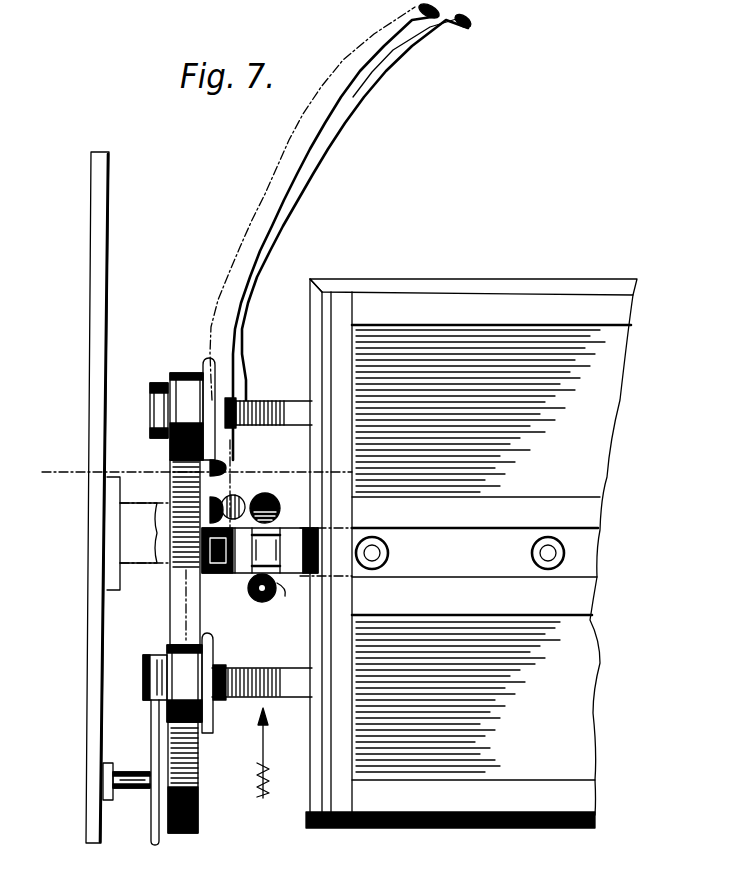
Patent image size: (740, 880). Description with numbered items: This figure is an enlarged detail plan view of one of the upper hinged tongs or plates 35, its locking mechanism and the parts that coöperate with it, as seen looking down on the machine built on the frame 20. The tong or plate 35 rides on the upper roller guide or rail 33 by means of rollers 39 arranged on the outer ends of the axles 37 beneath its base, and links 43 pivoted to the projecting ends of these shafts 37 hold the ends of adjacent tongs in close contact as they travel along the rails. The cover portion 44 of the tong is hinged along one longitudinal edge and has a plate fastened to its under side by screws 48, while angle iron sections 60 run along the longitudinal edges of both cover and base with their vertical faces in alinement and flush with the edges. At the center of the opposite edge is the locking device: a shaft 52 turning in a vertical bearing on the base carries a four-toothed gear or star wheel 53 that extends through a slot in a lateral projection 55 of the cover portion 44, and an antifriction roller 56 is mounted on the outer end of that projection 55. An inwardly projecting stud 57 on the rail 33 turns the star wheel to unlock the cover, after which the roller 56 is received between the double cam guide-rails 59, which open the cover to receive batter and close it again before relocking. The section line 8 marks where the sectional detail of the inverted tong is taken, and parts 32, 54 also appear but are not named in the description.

The frame 20 is at (112, 497).
The double cam guide-rails 59 is at (268, 180).
The section line 8 is at (197, 469).
The rollers 39 is at (187, 369).
The links 43 is at (150, 390).
The axles 37 is at (284, 400).
The upper roller guides or rails 33 is at (200, 812).
The bracket 32 is at (133, 803).
The antifriction roller 56 is at (197, 587).
The inwardly projecting stud 57 is at (238, 496).
The ball 54 is at (290, 493).
The four-toothed gear or star wheel 53 is at (268, 490).
The lateral projection 55 is at (235, 575).
The shaft 52 is at (291, 594).
The tongs or plates 35 is at (484, 547).
The cover portions 44 is at (480, 551).
The screws 48 is at (475, 554).
The angle iron sections 60 is at (338, 808).